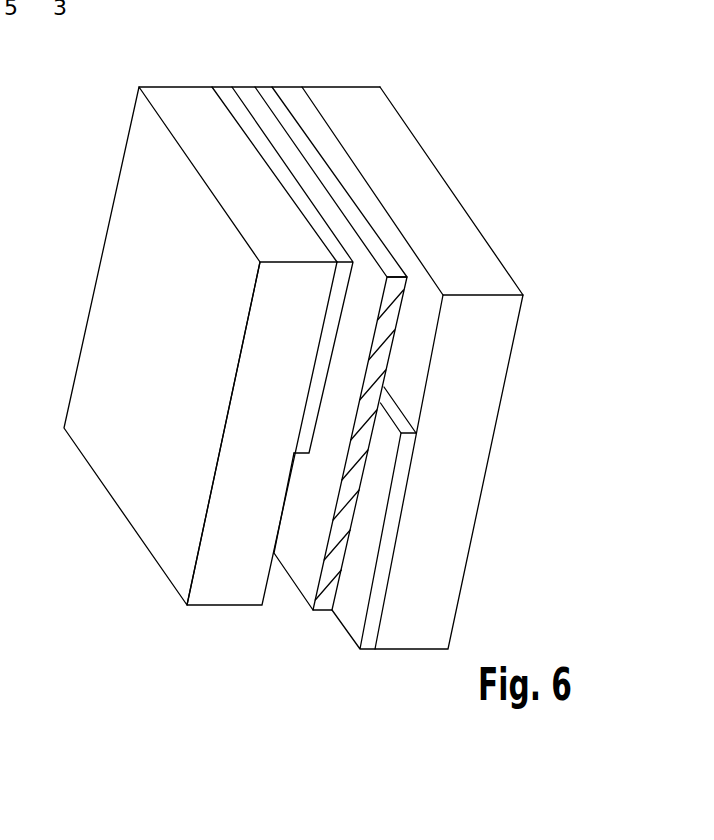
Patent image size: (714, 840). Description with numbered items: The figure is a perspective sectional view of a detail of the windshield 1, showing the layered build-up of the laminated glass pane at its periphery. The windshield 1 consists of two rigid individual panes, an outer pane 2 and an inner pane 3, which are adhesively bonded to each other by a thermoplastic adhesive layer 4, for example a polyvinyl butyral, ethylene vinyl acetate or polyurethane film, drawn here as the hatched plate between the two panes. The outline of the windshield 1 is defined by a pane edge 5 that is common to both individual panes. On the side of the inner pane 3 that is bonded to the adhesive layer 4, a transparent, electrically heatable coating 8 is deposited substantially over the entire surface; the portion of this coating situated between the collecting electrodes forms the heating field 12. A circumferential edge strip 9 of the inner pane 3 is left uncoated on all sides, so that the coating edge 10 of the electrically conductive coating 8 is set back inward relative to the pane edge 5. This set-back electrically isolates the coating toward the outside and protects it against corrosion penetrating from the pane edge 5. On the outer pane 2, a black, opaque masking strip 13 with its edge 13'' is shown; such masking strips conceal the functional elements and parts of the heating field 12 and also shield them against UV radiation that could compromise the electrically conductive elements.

The windshield 1 is at (297, 355).
The outer pane 2 is at (135, 337).
The inner pane 3 is at (433, 368).
The thermoplastic adhesive layer 4 is at (331, 399).
The pane edge 5 is at (417, 168).
The electrically heatable coating 8 is at (353, 500).
The edge strip 9 is at (417, 338).
The coating edge 10 is at (400, 412).
The heating field 12 is at (348, 607).
The masking strip 13 is at (204, 270).
The edge of masking strip 13'' is at (210, 531).